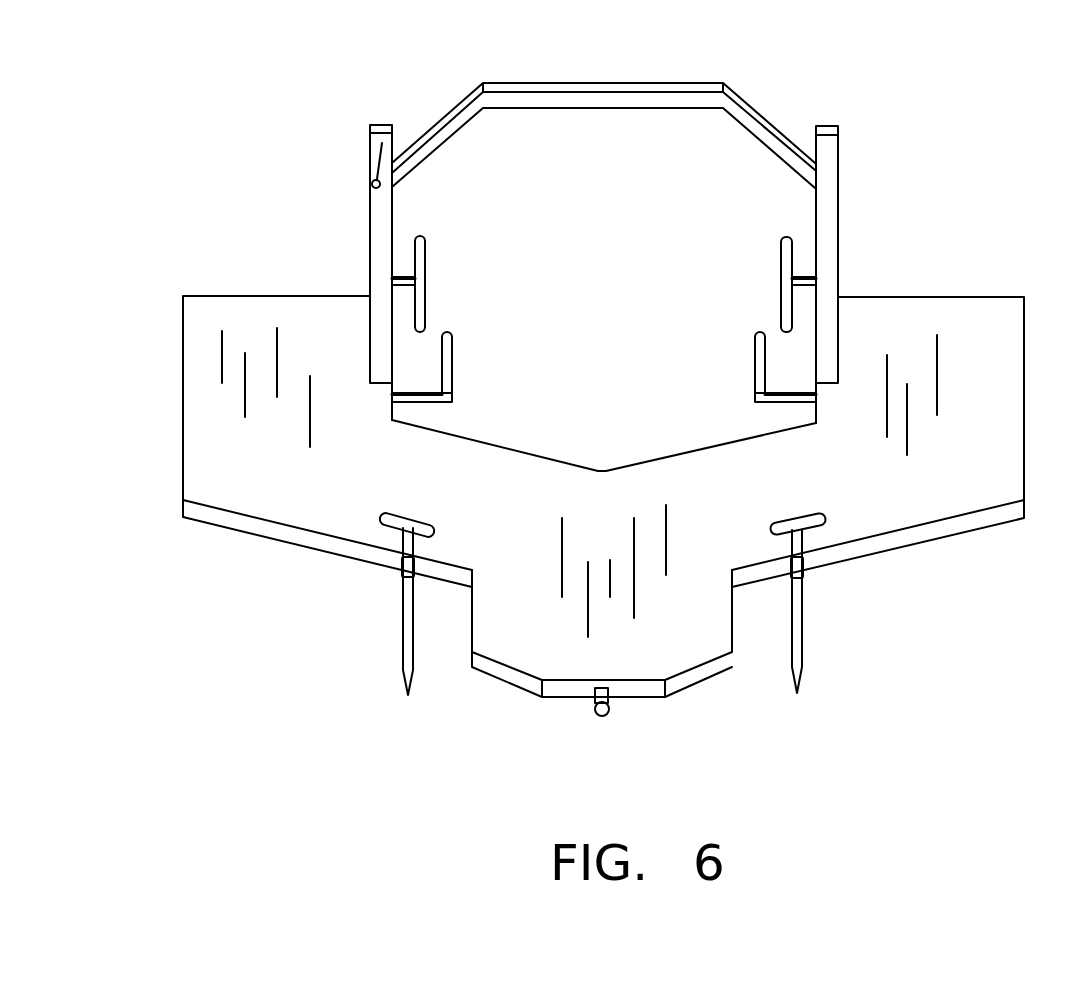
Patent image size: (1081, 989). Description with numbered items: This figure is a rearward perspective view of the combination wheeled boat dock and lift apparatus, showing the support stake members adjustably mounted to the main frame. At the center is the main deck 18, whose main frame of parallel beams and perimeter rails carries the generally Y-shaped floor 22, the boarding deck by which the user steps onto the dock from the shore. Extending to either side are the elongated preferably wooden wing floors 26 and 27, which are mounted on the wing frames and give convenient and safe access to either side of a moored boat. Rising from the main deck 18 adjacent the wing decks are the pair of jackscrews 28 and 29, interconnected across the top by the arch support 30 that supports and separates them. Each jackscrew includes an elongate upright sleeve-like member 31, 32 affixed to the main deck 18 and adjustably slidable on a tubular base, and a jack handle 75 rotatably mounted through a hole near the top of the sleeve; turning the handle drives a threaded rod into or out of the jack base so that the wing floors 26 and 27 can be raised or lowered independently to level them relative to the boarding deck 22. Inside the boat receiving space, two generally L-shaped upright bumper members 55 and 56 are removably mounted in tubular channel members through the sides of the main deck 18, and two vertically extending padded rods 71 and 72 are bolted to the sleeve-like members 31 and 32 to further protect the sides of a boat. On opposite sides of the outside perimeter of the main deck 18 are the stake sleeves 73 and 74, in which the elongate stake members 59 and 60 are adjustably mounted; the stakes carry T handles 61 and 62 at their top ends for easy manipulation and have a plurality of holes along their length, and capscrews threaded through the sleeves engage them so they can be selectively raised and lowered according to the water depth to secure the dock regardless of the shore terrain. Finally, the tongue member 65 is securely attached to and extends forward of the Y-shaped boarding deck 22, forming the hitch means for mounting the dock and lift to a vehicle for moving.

The main deck 18 is at (698, 677).
The Y-shaped floor 22 is at (522, 638).
The wing floor 26 is at (995, 388).
The wing floor 27 is at (210, 416).
The jackscrew 28 is at (342, 241).
The jackscrew 29 is at (863, 253).
The arch support 30 is at (617, 83).
The sleeve-like member 31 is at (372, 243).
The sleeve-like member 32 is at (838, 237).
The L-shaped upright bumper member 55 is at (780, 285).
The L-shaped upright bumper member 56 is at (427, 277).
The stake member 59 is at (803, 623).
The stake member 60 is at (400, 630).
The T handle 61 is at (800, 510).
The T handle 62 is at (400, 517).
The tongue member 65 is at (603, 717).
The padded rod 71 is at (755, 378).
The padded rod 72 is at (452, 392).
The stake sleeve 73 is at (805, 570).
The stake sleeve 74 is at (400, 572).
The jack handle 75 is at (372, 182).